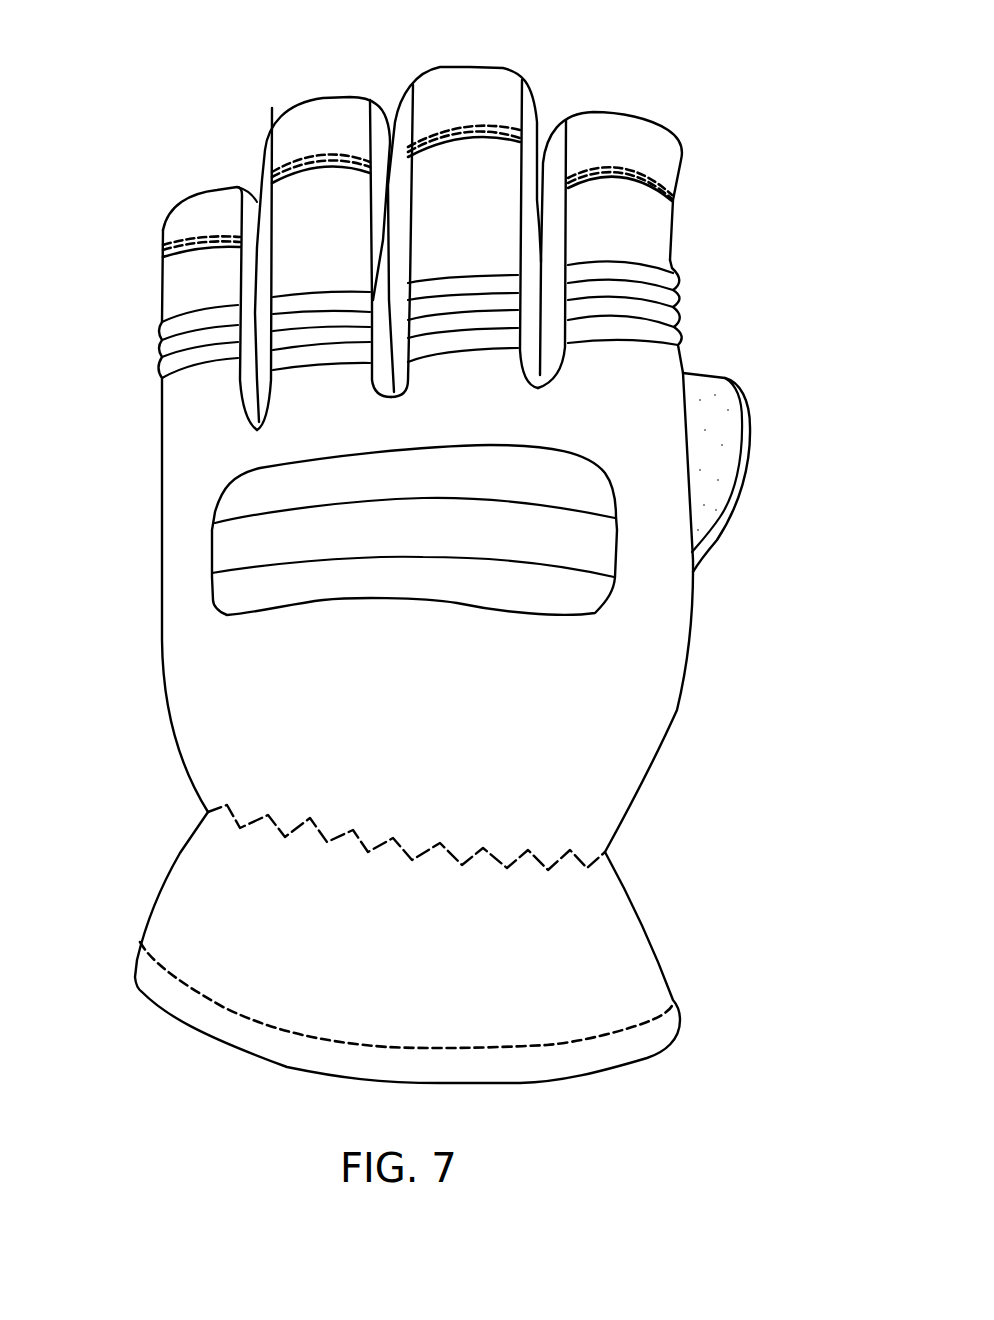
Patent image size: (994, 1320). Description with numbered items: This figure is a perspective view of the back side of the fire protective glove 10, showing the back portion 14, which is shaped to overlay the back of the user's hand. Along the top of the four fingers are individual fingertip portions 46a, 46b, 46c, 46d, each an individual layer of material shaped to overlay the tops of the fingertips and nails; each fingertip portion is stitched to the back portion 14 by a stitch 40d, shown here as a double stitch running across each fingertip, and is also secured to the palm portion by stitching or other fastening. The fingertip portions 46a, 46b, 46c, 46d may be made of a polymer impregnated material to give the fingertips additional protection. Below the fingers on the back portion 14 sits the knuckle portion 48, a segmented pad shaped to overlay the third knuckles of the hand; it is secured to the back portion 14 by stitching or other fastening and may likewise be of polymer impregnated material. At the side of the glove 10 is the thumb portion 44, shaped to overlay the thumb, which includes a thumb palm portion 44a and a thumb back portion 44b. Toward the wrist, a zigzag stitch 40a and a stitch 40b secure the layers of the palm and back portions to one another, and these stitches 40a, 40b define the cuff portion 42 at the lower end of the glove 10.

The fire protective glove 10 is at (122, 170).
The back portion 14 is at (655, 732).
The cuff portion 42 is at (395, 938).
The stitch 40a is at (528, 850).
The stitch 40b is at (607, 1035).
The stitch 40d is at (627, 165).
The thumb portion 44 is at (748, 449).
The thumb palm portion 44a is at (708, 383).
The thumb back portion 44b is at (728, 502).
The fingertip portion 46a is at (610, 227).
The fingertip portion 46b is at (463, 72).
The fingertip portion 46c is at (320, 108).
The fingertip portion 46d is at (205, 200).
The knuckle portion 48 is at (258, 602).